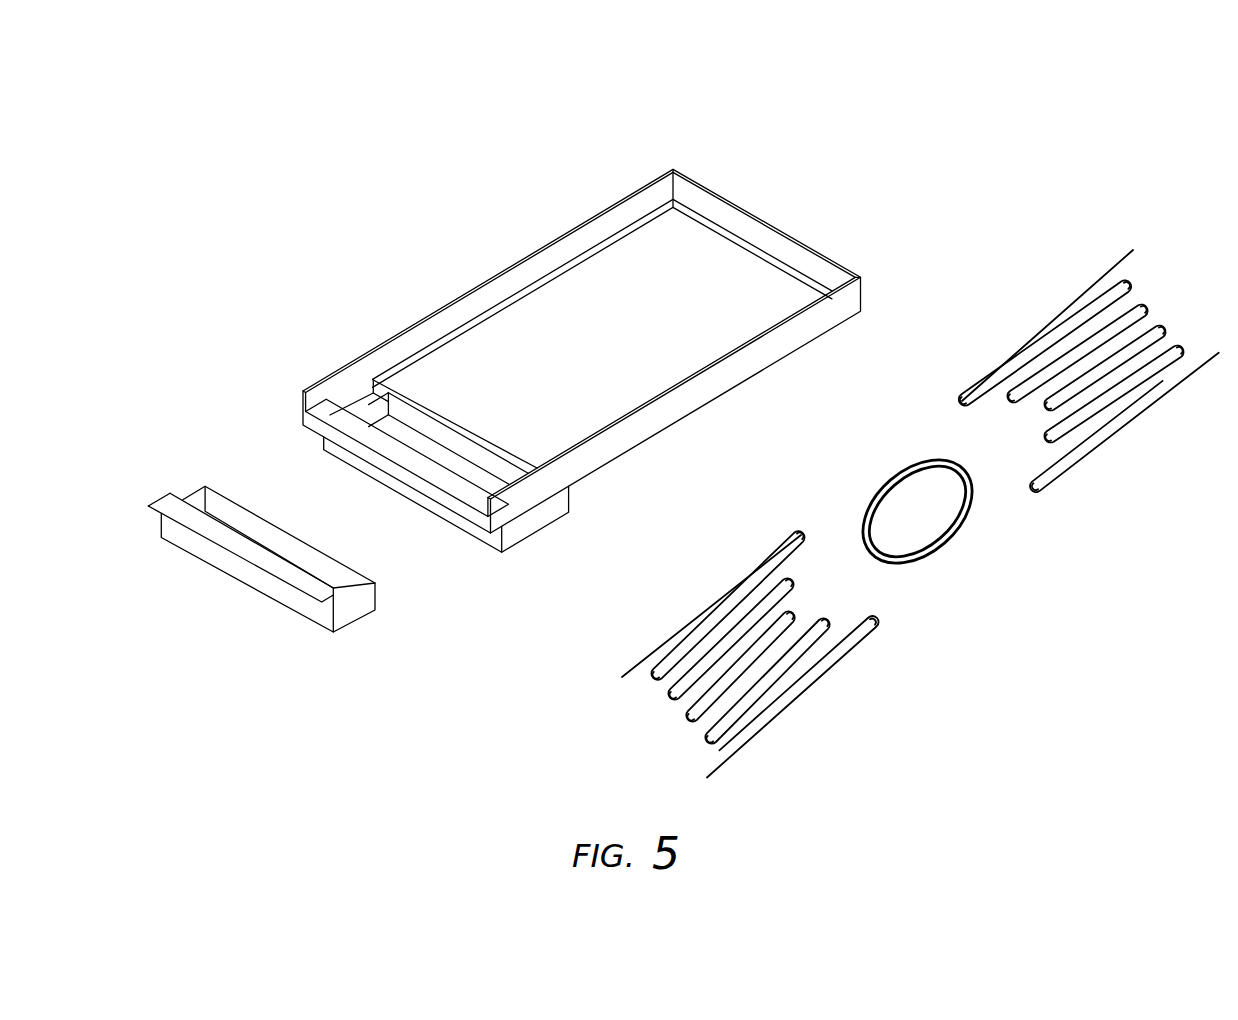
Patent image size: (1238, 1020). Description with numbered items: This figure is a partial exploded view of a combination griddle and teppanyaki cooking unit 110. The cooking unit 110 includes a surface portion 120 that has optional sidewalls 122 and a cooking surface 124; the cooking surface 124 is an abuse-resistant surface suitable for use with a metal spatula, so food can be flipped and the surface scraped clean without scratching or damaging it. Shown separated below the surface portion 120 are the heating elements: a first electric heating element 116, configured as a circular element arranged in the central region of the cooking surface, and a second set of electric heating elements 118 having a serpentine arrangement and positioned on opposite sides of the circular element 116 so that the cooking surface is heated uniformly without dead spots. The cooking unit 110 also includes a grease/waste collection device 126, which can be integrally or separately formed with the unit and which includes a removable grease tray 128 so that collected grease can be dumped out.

The combination griddle and teppanyaki cooking unit 110 is at (1078, 820).
The first electric heating element 116 is at (903, 472).
The second electric heating element 118 is at (1097, 278).
The surface portion 120 is at (770, 178).
The sidewalls 122 is at (610, 232).
The cooking surface 124 is at (522, 332).
The grease/waste collection device 126 is at (368, 405).
The removable grease tray 128 is at (173, 503).